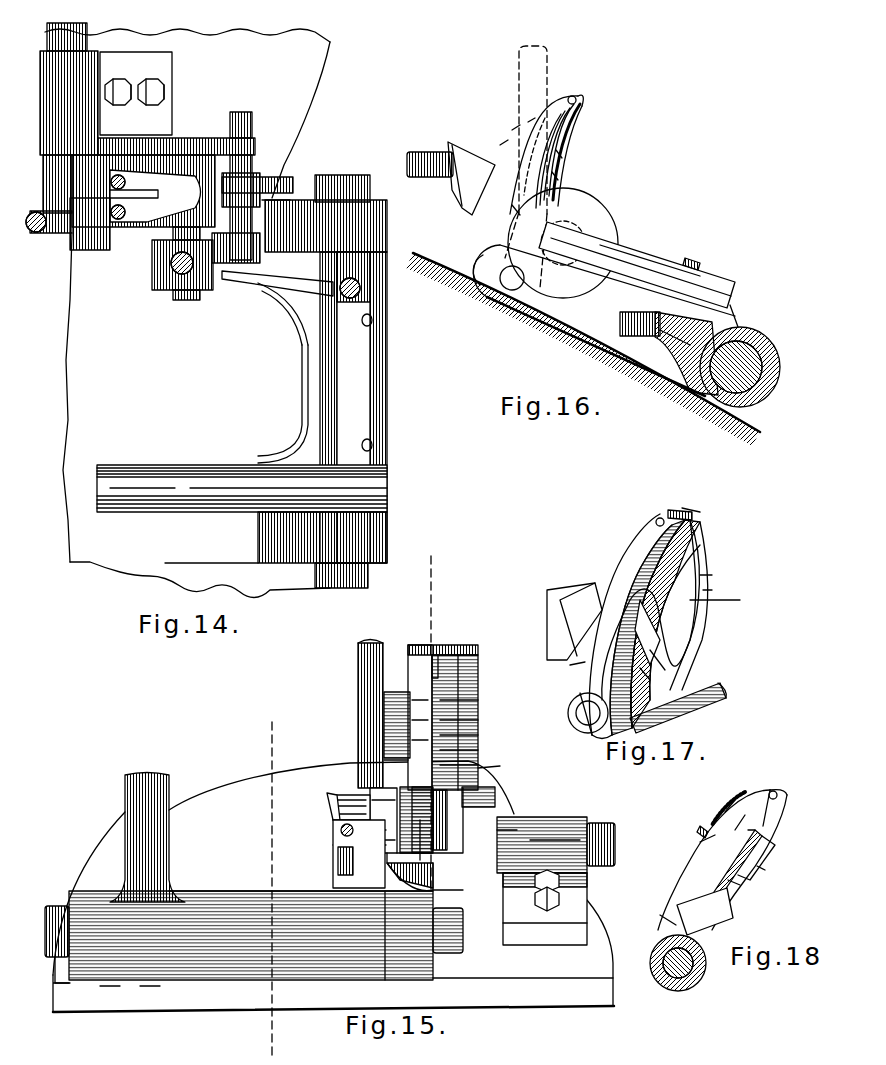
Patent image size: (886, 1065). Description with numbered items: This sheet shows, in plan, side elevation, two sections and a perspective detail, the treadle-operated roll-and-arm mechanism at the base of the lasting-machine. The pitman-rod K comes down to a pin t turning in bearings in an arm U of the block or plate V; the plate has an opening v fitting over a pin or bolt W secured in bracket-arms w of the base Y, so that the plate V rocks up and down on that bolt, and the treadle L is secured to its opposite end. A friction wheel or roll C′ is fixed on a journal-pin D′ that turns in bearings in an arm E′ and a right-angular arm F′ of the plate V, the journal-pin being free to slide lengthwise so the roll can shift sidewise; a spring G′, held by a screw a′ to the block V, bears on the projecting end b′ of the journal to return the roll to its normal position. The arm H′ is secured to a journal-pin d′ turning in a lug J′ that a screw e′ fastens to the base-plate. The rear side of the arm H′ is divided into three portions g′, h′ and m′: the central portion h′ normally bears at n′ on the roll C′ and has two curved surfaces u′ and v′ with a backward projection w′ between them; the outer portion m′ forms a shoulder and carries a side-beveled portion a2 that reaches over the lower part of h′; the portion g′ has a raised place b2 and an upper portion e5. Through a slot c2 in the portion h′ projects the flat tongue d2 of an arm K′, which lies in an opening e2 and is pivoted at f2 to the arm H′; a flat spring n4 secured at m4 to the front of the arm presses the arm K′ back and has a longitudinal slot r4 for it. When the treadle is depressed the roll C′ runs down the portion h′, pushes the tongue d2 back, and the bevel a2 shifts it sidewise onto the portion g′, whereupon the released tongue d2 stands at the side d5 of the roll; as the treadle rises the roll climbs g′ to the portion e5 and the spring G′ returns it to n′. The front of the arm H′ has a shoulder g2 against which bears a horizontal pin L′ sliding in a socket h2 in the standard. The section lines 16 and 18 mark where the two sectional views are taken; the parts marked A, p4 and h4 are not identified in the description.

In FIG. 14, the frame A is at (187, 313).
In FIG. 15, the frame A is at (333, 886).
In FIG. 14, the lug J′ is at (40, 130).
In FIG. 15, the lug J′ is at (553, 823).
In FIG. 14, the screw e′ is at (130, 80).
In FIG. 15, the screw e′ is at (587, 895).
In FIG. 14, the arm H′ is at (196, 160).
In FIG. 16, the arm H′ is at (475, 228).
In FIG. 17, the arm H′ is at (690, 624).
In FIG. 18, the arm H′ is at (690, 862).
In FIG. 15, the arm H′ is at (478, 718).
In FIG. 14, the flat spring n4 is at (168, 172).
In FIG. 16, the flat spring n4 is at (515, 128).
In FIG. 17, the flat spring n4 is at (690, 508).
In FIG. 14, the securing point of flat spring m4 is at (122, 176).
In FIG. 16, the securing point of flat spring m4 is at (500, 144).
In FIG. 18, the securing point of flat spring m4 is at (700, 842).
In FIG. 14, the screw p4 is at (145, 195).
In FIG. 14, the journal-pin d′ is at (43, 185).
In FIG. 16, the journal-pin d′ is at (472, 265).
In FIG. 17, the journal-pin d′ is at (665, 670).
In FIG. 18, the journal-pin d′ is at (652, 972).
In FIG. 15, the journal-pin d′ is at (615, 840).
In FIG. 14, the horizontal pin L′ is at (42, 235).
In FIG. 16, the horizontal pin L′ is at (420, 178).
In FIG. 14, the bearing place or shoulder g2 is at (88, 252).
In FIG. 16, the bearing place or shoulder g2 is at (463, 190).
In FIG. 17, the bearing place or shoulder g2 is at (547, 610).
In FIG. 14, the journal-pin D′ is at (252, 122).
In FIG. 16, the journal-pin D′ is at (575, 232).
In FIG. 15, the journal-pin D′ is at (340, 830).
In FIG. 14, the side of the roll d5 is at (288, 177).
In FIG. 15, the side of the roll d5 is at (430, 870).
In FIG. 14, the friction wheel or roll C′ is at (268, 200).
In FIG. 16, the friction wheel or roll C′ is at (612, 215).
In FIG. 15, the friction wheel or roll C′ is at (360, 795).
In FIG. 14, the arm U is at (226, 266).
In FIG. 14, the pitman-rod K is at (178, 270).
In FIG. 16, the pitman-rod K is at (522, 112).
In FIG. 17, the pitman-rod K is at (680, 510).
In FIG. 15, the pitman-rod K is at (384, 718).
In FIG. 14, the pin t is at (185, 300).
In FIG. 16, the pin t is at (520, 287).
In FIG. 14, the projecting end of wheel-journal b′ is at (262, 270).
In FIG. 15, the projecting end of wheel-journal b′ is at (330, 793).
In FIG. 14, the spring G′ is at (270, 305).
In FIG. 16, the spring G′ is at (606, 247).
In FIG. 14, the block or plate V is at (299, 370).
In FIG. 16, the block or plate V is at (670, 345).
In FIG. 15, the block or plate V is at (247, 878).
In FIG. 14, the screw a′ is at (360, 288).
In FIG. 16, the screw a′ is at (418, 290).
In FIG. 15, the screw a′ is at (335, 860).
In FIG. 14, the treadle L is at (140, 470).
In FIG. 15, the treadle L is at (125, 805).
In FIG. 14, the bracket-arms w is at (387, 530).
In FIG. 15, the bracket-arms w is at (433, 965).
In FIG. 14, the pin or bolt W is at (368, 578).
In FIG. 16, the pin or bolt W is at (756, 405).
In FIG. 15, the pin or bolt W is at (60, 900).
In FIG. 16, the curved portion of arm g′ is at (578, 110).
In FIG. 17, the curved portion of arm g′ is at (622, 565).
In FIG. 15, the curved portion of arm g′ is at (383, 665).
In FIG. 16, the pivot f2 is at (577, 98).
In FIG. 17, the pivot f2 is at (656, 520).
In FIG. 18, the pivot f2 is at (778, 794).
In FIG. 16, the central portion of arm h′ is at (562, 125).
In FIG. 17, the central portion of arm h′ is at (692, 568).
In FIG. 18, the central portion of arm h′ is at (770, 845).
In FIG. 15, the central portion of arm h′ is at (455, 655).
In FIG. 16, the bearing point n′ is at (565, 135).
In FIG. 17, the bearing point n′ is at (700, 540).
In FIG. 18, the bearing point n′ is at (752, 855).
In FIG. 16, the outer portion of arm m′ is at (560, 147).
In FIG. 17, the outer portion of arm m′ is at (705, 598).
In FIG. 18, the outer portion of arm m′ is at (762, 870).
In FIG. 15, the outer portion of arm m′ is at (478, 750).
In FIG. 16, the curved portion u′ is at (557, 160).
In FIG. 17, the curved portion u′ is at (700, 580).
In FIG. 15, the curved portion u′ is at (478, 700).
In FIG. 16, the backward projection w′ is at (556, 168).
In FIG. 17, the backward projection w′ is at (740, 600).
In FIG. 18, the backward projection w′ is at (760, 835).
In FIG. 15, the backward projection w′ is at (478, 735).
In FIG. 16, the curved portion v′ is at (556, 184).
In FIG. 17, the curved portion v′ is at (660, 640).
In FIG. 18, the curved portion v′ is at (740, 885).
In FIG. 15, the curved portion v′ is at (478, 765).
In FIG. 16, the upper portion of curved portion e5 is at (530, 132).
In FIG. 17, the upper portion of curved portion e5 is at (650, 552).
In FIG. 16, the raised portion b2 is at (510, 210).
In FIG. 17, the raised portion b2 is at (575, 672).
In FIG. 15, the raised portion b2 is at (384, 760).
In FIG. 16, the arm E′ is at (563, 220).
In FIG. 15, the arm E′ is at (333, 845).
In FIG. 16, the opening v is at (695, 368).
In FIG. 17, the slot c2 is at (650, 680).
In FIG. 18, the slot c2 is at (660, 915).
In FIG. 15, the slot c2 is at (500, 766).
In FIG. 17, the flat tongue d2 is at (600, 694).
In FIG. 18, the flat tongue d2 is at (733, 912).
In FIG. 15, the flat tongue d2 is at (478, 780).
In FIG. 17, the side beveled portion a2 is at (690, 705).
In FIG. 15, the side beveled portion a2 is at (440, 862).
In FIG. 18, the opening e2 is at (770, 790).
In FIG. 18, the serrated edge h4 is at (730, 800).
In FIG. 18, the longitudinal slot r4 is at (725, 812).
In FIG. 18, the arm K′ is at (735, 830).
In FIG. 15, the arm K′ is at (420, 665).
In FIG. 18, the socket h2 is at (697, 832).
In FIG. 15, the base Y is at (190, 992).
In FIG. 15, the section line 16 is at (273, 884).
In FIG. 15, the section line 18 is at (442, 724).
In FIG. 15, the right-angular arm F′ is at (517, 818).